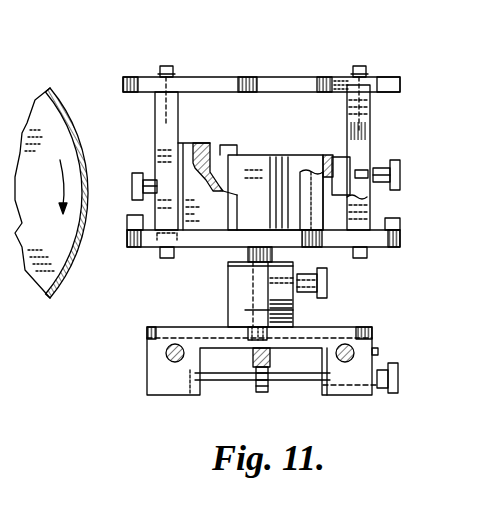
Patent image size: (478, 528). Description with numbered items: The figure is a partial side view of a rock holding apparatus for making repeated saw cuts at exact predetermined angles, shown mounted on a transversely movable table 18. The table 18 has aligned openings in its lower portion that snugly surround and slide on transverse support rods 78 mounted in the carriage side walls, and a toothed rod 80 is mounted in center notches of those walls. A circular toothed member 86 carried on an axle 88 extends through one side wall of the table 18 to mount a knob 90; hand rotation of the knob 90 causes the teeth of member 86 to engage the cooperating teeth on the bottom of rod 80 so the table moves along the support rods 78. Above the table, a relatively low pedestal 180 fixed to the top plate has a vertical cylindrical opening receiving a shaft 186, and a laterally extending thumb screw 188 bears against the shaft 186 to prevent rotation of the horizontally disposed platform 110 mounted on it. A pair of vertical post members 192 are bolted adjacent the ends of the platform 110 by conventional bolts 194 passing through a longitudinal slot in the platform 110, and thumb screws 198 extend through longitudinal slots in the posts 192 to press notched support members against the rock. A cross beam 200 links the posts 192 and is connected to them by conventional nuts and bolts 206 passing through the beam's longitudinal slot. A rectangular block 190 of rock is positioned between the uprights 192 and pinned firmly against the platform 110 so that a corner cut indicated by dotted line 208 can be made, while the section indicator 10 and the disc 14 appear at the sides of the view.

The section line 10- 10 is at (102, 148).
The disc / grinding wheel 14 is at (56, 110).
The transversely movable table 18 is at (147, 368).
The transverse support rods 78 is at (173, 345).
The toothed rod 80 is at (252, 357).
The circular toothed member 86 is at (263, 393).
The axle 88 is at (299, 381).
The knob 90 is at (398, 372).
The platform 110 is at (401, 238).
The low pedestal 180 is at (294, 313).
The shaft 186 is at (228, 273).
The thumb screw 188 is at (327, 278).
The rectangular block 190 is at (282, 158).
The vertical post members 192 is at (178, 107).
The bolts 194 is at (158, 256).
The thumb screws 198 is at (137, 173).
The cross beam 200 is at (261, 86).
The nuts and bolts 206 is at (157, 68).
The dotted line 208 is at (223, 151).